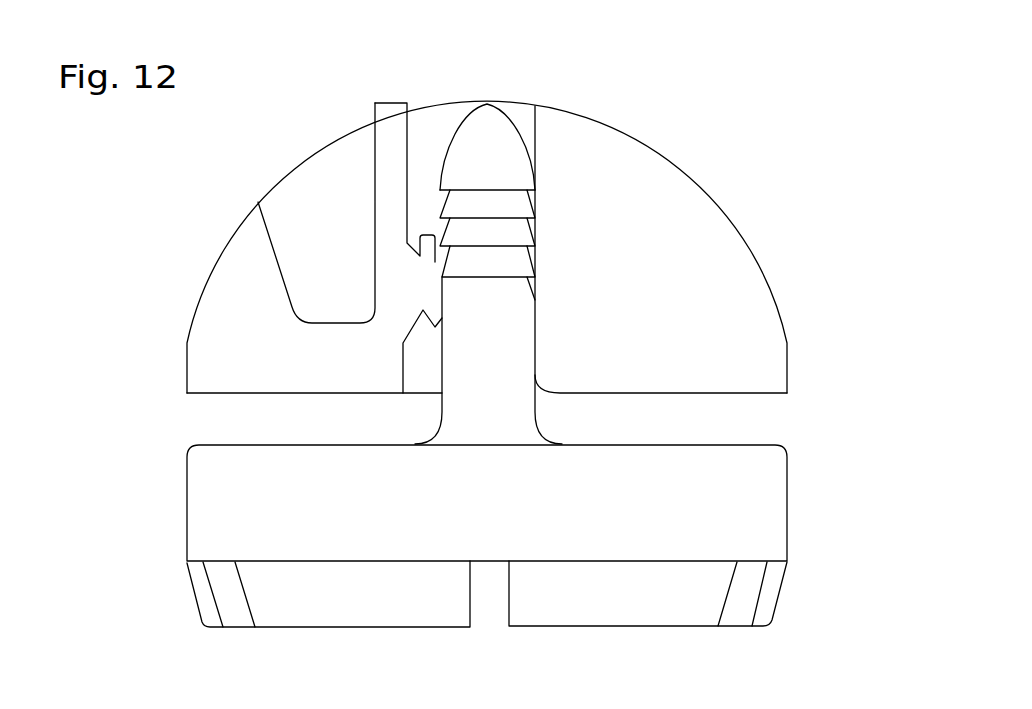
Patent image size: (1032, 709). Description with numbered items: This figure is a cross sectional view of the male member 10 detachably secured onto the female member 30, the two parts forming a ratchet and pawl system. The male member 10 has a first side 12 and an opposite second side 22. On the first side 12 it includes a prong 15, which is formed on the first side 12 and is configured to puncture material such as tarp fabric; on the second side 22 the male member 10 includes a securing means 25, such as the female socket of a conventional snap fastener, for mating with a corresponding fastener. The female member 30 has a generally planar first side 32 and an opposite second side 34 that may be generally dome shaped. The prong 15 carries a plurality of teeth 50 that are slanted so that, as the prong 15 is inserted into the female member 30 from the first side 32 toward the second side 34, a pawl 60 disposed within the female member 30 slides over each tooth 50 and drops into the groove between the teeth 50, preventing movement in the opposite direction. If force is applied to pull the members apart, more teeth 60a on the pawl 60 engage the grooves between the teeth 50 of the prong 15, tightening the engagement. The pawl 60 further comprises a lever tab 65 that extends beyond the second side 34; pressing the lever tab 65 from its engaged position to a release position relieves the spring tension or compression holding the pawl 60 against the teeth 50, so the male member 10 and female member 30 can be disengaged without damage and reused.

The male member 10 is at (158, 463).
The first side 12 is at (747, 442).
The prong 15 is at (495, 340).
The second side 22 is at (784, 640).
The securing means 25 is at (620, 627).
The female member 30 is at (688, 118).
The first side 32 is at (265, 395).
The second side 34 is at (705, 283).
The teeth 50 is at (535, 277).
The pawl 60 is at (365, 192).
The teeth 60a is at (440, 253).
The lever tab 65 is at (375, 103).